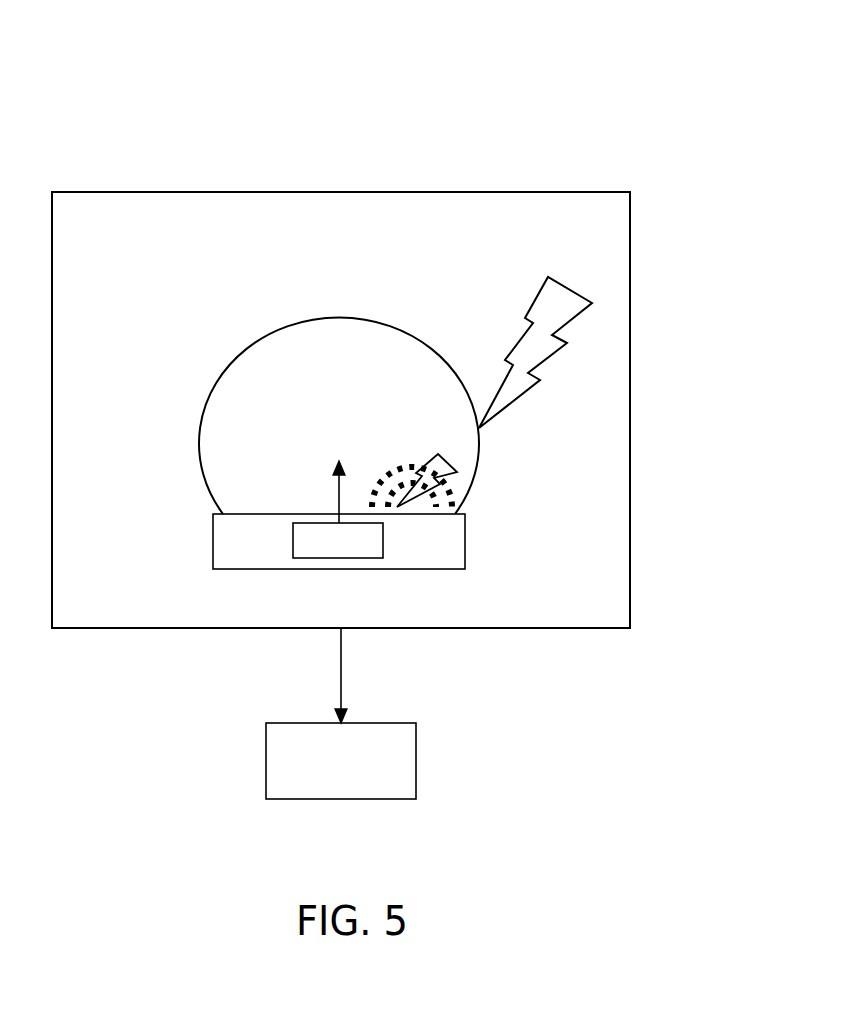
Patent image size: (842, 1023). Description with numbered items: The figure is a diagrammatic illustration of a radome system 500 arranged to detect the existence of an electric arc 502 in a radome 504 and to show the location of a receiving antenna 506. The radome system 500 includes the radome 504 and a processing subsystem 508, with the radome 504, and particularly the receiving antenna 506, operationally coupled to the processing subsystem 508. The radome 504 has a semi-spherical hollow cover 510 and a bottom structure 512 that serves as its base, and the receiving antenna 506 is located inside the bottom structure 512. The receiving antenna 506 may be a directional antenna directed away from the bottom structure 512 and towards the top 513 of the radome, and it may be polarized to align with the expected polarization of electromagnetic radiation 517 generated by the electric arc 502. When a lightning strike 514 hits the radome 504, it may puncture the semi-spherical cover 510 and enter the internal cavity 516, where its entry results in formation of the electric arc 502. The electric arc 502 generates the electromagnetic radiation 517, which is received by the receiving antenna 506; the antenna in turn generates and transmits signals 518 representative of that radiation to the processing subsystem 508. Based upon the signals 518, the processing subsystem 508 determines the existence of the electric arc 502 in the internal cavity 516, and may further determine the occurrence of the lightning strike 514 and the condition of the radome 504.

The radome system 500 is at (632, 83).
The electric arc 502 is at (455, 493).
The radome 504 is at (631, 421).
The receiving antenna 506 is at (343, 548).
The processing subsystem 508 is at (416, 757).
The semi-spherical hollow cover 510 is at (339, 315).
The bottom structure 512 is at (242, 565).
The top of the radome 513 is at (364, 311).
The lightning strike 514 is at (570, 288).
The internal cavity 516 is at (317, 438).
The electromagnetic radiation 517 is at (392, 474).
The signals 518 is at (342, 672).